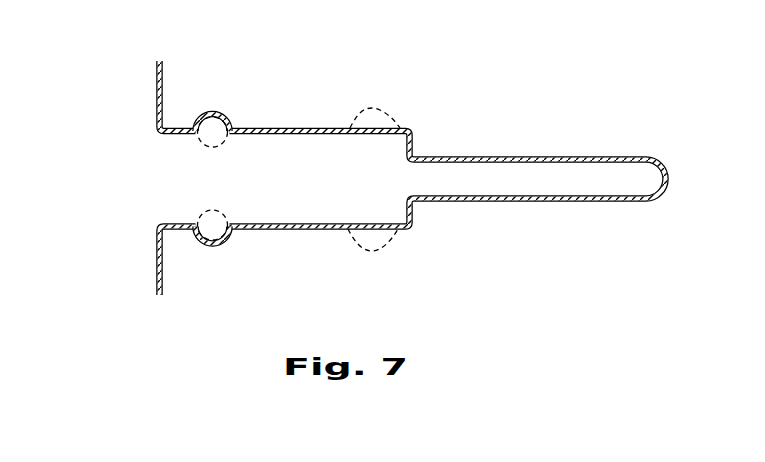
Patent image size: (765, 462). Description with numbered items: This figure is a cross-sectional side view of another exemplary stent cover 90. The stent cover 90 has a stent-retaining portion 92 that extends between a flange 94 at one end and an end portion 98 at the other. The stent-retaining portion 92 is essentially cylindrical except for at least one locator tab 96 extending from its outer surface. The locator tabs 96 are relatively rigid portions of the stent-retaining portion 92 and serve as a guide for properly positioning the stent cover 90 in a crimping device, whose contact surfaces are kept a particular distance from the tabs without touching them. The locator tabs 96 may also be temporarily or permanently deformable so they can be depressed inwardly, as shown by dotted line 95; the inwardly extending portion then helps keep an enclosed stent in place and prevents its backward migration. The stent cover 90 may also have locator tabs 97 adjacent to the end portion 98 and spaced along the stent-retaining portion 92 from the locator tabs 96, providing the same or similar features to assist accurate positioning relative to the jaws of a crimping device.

The stent cover 90 is at (413, 179).
The stent-retaining portion 92 is at (330, 129).
The flange 94 is at (162, 80).
The dotted line 95 is at (222, 147).
The locator tab 96 is at (213, 108).
The locator tab 97 is at (372, 107).
The end portion 98 is at (582, 156).